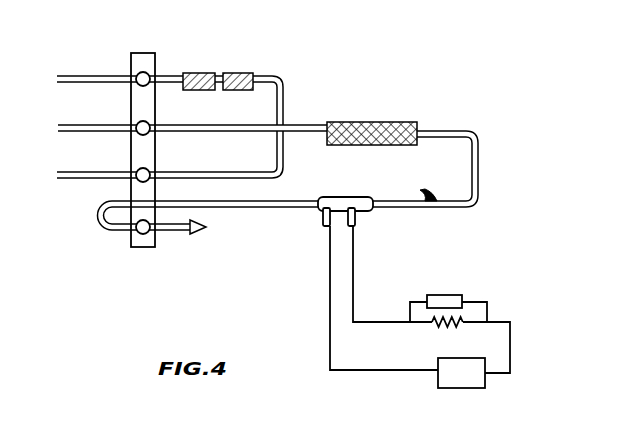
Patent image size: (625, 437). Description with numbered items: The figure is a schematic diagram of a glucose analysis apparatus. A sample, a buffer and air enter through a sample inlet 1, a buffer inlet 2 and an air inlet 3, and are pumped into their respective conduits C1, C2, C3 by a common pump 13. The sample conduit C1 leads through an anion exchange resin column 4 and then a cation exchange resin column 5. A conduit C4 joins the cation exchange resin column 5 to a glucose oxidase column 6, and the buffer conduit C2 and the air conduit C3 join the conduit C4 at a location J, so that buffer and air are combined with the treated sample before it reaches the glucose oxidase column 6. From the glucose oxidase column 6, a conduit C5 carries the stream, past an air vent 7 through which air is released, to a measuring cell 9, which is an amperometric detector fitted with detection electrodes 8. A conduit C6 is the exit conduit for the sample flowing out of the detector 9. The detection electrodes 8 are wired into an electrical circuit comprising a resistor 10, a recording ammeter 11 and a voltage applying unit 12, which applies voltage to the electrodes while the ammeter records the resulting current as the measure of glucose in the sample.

The sample inlet 1 is at (161, 102).
The buffer inlet 2 is at (180, 109).
The air inlet 3 is at (71, 156).
The anion exchange resin column 4 is at (200, 73).
The cation exchange resin column 5 is at (242, 73).
The glucose oxidase column 6 is at (390, 121).
The air vent 7 is at (438, 192).
The detection electrodes 8 is at (338, 198).
The measuring cell (amperometric detector) 9 is at (361, 199).
The resistor 10 is at (432, 330).
The recording ammeter 11 is at (455, 294).
The voltage applying unit 12 is at (441, 381).
The common pump 13 is at (150, 52).
The sample conduit C1 is at (58, 77).
The buffer conduit C2 is at (46, 108).
The air conduit C3 is at (96, 156).
The conduit C4 is at (283, 85).
The conduit C5 is at (479, 167).
The exit conduit C6 is at (247, 208).
The junction location J is at (284, 126).